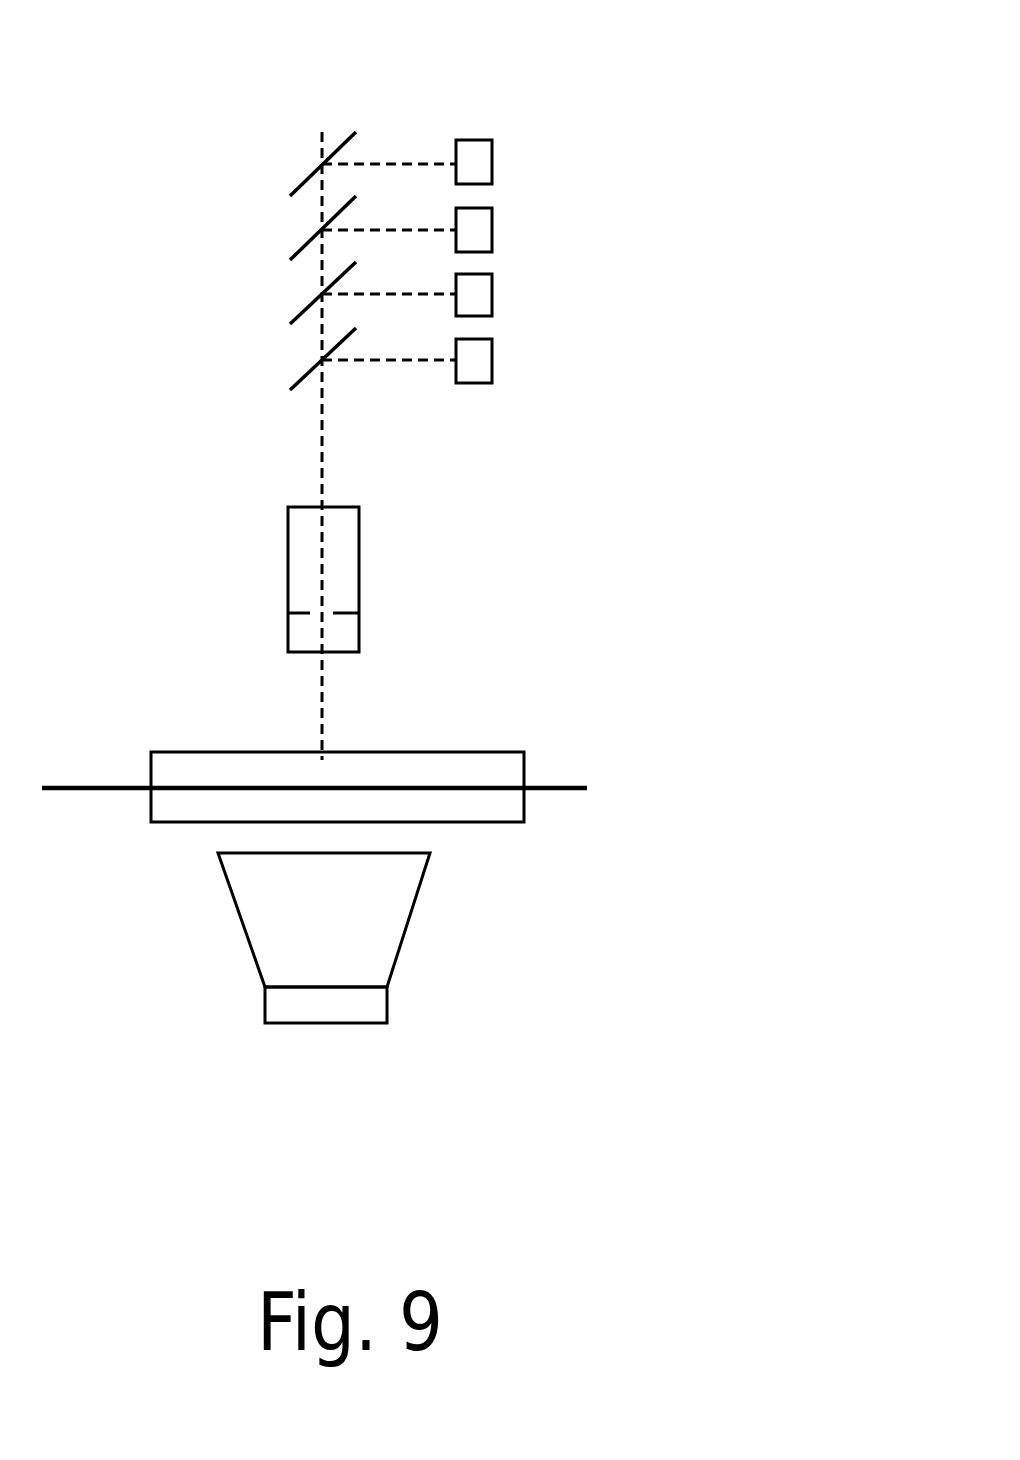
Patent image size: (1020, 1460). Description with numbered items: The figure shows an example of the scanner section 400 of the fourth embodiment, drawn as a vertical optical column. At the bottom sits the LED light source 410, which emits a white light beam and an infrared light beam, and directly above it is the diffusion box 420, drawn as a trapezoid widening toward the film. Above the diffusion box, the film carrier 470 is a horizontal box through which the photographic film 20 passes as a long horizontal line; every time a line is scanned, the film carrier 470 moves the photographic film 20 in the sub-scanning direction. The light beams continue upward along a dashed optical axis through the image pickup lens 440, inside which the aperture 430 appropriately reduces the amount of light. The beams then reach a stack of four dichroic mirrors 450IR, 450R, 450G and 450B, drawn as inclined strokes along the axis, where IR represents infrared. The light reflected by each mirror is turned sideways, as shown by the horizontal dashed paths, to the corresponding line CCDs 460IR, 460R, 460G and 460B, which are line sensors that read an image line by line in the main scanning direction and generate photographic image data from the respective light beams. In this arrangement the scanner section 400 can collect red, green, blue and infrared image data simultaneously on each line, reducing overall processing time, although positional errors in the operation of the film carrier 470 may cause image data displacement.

The scanner section 400 is at (703, 152).
The dichroic mirror 450B is at (313, 172).
The dichroic mirror 450G is at (308, 240).
The dichroic mirror 450R is at (307, 312).
The dichroic mirror 450IR is at (303, 380).
The line CCD 460B is at (492, 163).
The line CCD 460G is at (492, 230).
The line CCD 460R is at (492, 294).
The line CCD 460IR is at (492, 360).
The image pickup lens 440 is at (360, 547).
The aperture 430 is at (342, 613).
The film carrier 470 is at (498, 753).
The photographic film 20 is at (97, 785).
The diffusion box 420 is at (410, 918).
The LED light source 410 is at (387, 1002).